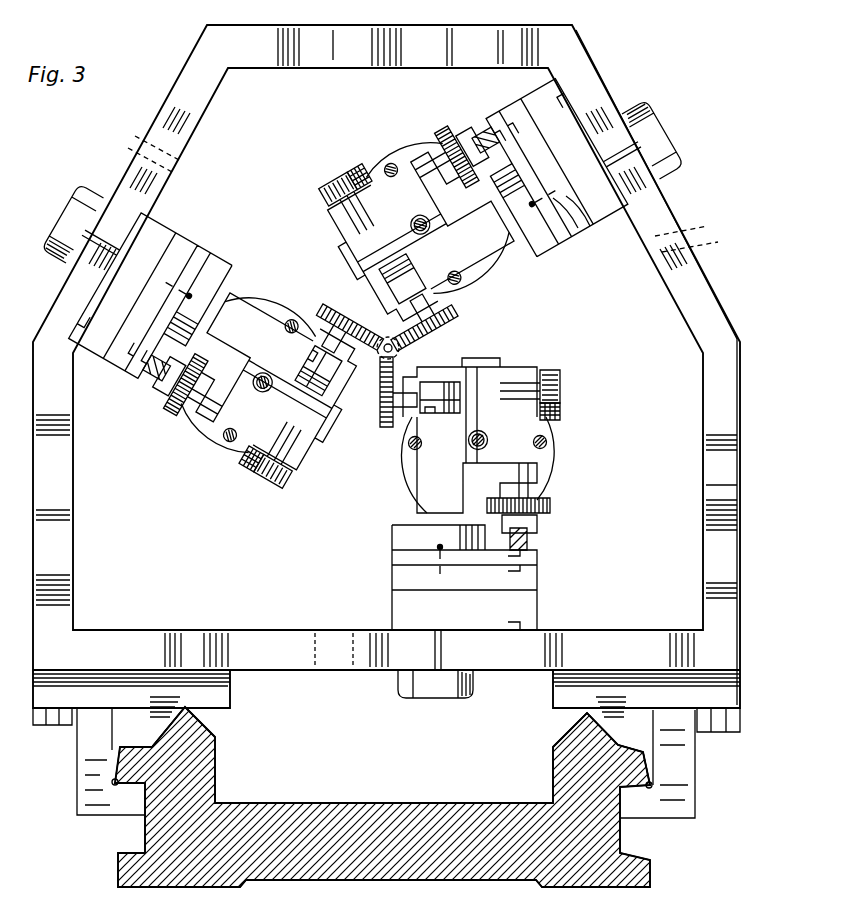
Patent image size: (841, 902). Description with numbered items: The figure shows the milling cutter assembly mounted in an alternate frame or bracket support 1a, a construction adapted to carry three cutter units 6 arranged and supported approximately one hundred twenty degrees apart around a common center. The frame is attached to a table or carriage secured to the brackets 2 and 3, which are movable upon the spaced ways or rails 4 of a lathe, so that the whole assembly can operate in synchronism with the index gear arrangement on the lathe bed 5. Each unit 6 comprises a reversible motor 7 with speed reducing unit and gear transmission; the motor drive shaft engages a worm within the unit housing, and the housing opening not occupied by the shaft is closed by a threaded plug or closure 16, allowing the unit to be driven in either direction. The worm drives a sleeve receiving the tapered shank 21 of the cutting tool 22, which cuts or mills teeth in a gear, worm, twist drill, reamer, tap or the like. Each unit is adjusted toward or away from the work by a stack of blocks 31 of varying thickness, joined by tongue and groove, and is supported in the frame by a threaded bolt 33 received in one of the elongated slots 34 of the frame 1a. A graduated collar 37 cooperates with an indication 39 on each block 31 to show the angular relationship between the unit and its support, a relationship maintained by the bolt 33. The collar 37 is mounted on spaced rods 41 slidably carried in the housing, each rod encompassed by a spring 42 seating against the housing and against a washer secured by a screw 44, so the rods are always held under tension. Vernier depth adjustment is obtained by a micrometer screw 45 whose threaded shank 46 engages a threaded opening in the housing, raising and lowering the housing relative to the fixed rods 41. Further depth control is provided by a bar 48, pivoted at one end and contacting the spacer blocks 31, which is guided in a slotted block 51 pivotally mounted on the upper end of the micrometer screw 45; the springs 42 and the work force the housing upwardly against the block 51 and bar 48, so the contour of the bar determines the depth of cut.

The frame or bracket support 1a is at (672, 205).
The bracket 2 is at (77, 760).
The bracket 3 is at (695, 763).
The spaced ways or rails 4 is at (510, 768).
The bed 5 is at (393, 803).
The unit 6 is at (555, 457).
The motor 7 is at (412, 470).
The threaded plug or closure 16 is at (488, 443).
The tapered shank 21 is at (322, 320).
The cutting tool 22 is at (384, 428).
The block 31 is at (200, 250).
The threaded bolt 33 is at (437, 690).
The elongated slot 34 is at (148, 152).
The collar 37 is at (392, 540).
The indication 39 is at (582, 230).
The rod 41 is at (452, 410).
The spring 42 is at (460, 416).
The screw 44 is at (441, 376).
The micrometer screw 45 is at (556, 370).
The shank 46 is at (543, 399).
The bar 48 is at (528, 543).
The block 51 is at (550, 514).